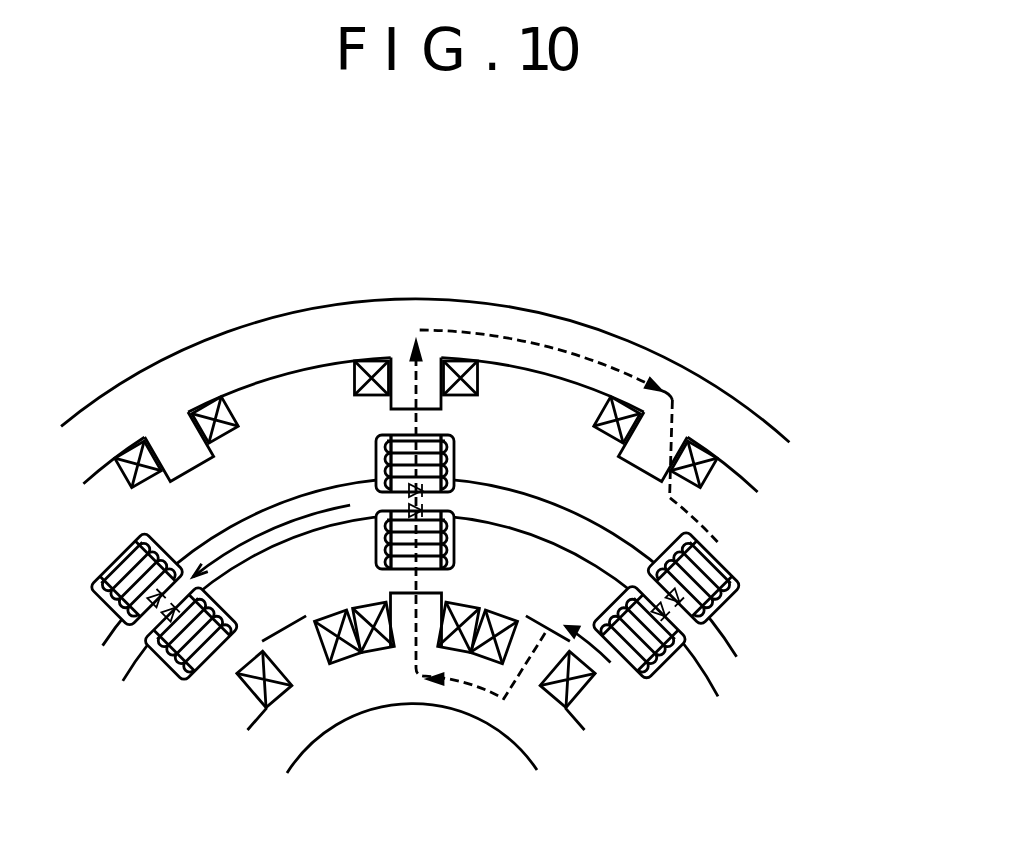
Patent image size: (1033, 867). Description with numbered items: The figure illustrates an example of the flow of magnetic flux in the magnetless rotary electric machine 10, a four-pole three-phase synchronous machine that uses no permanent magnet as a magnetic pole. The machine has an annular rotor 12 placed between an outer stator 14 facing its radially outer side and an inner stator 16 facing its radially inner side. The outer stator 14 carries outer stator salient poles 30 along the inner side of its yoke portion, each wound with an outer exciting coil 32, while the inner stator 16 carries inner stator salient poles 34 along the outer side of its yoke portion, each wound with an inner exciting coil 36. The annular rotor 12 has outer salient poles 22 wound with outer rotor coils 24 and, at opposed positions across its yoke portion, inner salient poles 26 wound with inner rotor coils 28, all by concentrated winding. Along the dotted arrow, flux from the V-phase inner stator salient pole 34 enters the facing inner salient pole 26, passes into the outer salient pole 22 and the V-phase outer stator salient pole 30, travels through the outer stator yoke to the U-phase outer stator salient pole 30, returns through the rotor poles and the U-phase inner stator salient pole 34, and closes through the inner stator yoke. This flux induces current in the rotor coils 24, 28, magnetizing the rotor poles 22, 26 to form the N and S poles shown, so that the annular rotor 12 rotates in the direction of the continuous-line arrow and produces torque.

The rotary electric machine 10 is at (806, 384).
The annular rotor 12 is at (142, 714).
The outer stator 14 is at (98, 519).
The inner stator 16 is at (272, 795).
The outer salient pole 22 is at (402, 435).
The outer rotor coil 24 is at (457, 458).
The inner salient pole 26 is at (407, 562).
The inner rotor coil 28 is at (460, 548).
The outer stator salient pole 30 is at (407, 403).
The outer exciting coil 32 is at (473, 382).
The inner stator salient pole 34 is at (405, 600).
The inner exciting coil 36 is at (373, 643).